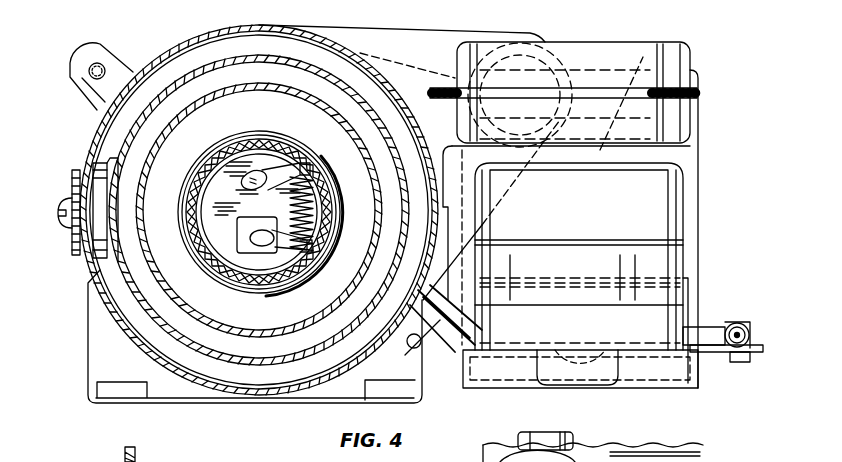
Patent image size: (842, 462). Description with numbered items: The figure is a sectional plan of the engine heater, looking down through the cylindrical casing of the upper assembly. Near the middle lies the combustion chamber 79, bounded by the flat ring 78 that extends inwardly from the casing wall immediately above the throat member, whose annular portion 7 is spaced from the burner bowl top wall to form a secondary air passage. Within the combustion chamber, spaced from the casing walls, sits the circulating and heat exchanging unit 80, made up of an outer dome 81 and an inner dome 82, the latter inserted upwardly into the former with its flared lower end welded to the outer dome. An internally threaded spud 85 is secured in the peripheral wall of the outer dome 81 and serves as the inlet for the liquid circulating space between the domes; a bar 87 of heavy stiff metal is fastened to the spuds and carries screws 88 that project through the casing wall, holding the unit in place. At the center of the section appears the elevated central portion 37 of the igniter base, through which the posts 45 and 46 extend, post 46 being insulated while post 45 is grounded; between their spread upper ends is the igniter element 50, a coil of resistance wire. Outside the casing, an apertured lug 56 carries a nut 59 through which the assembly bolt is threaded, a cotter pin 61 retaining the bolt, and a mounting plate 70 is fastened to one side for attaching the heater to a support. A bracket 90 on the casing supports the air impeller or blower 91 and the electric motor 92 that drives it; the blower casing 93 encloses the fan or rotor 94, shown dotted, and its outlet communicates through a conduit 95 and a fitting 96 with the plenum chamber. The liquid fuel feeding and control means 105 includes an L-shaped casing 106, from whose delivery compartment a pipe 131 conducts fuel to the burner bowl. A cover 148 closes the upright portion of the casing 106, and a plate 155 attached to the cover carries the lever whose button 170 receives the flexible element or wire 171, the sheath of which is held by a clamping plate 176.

The annular portion 7 is at (227, 307).
The elevated central portion 37 is at (220, 198).
The post 45 is at (268, 172).
The post 46 is at (272, 252).
The igniter element 50 is at (312, 223).
The apertured lug 56 is at (70, 64).
The nut 59 is at (96, 90).
The cotter pin 61 is at (104, 64).
The mounting plate 70 is at (254, 401).
The flat ring 78 is at (183, 358).
The combustion chamber 79 is at (262, 43).
The circulating and heat exchanging unit 80 is at (382, 253).
The outer dome 81 is at (386, 138).
The inner dome 82 is at (368, 166).
The internally threaded spud 85 is at (72, 250).
The bar 87 is at (92, 156).
The screw 88 is at (58, 218).
The bracket 90 is at (680, 155).
The air impeller or blower 91 is at (611, 30).
The electric motor 92 is at (685, 225).
The blower casing 93 is at (690, 70).
The fan or rotor 94 is at (699, 108).
The conduit 95 is at (535, 40).
The fitting 96 is at (450, 44).
The liquid fuel feeding and control means 105 is at (700, 190).
The casing 106 is at (690, 270).
The pipe 131 is at (478, 282).
The cover 148 is at (690, 380).
The plate 155 is at (105, 454).
The button 170 is at (750, 358).
The flexible element or wire 171 is at (742, 325).
The clamping plate 176 is at (706, 325).